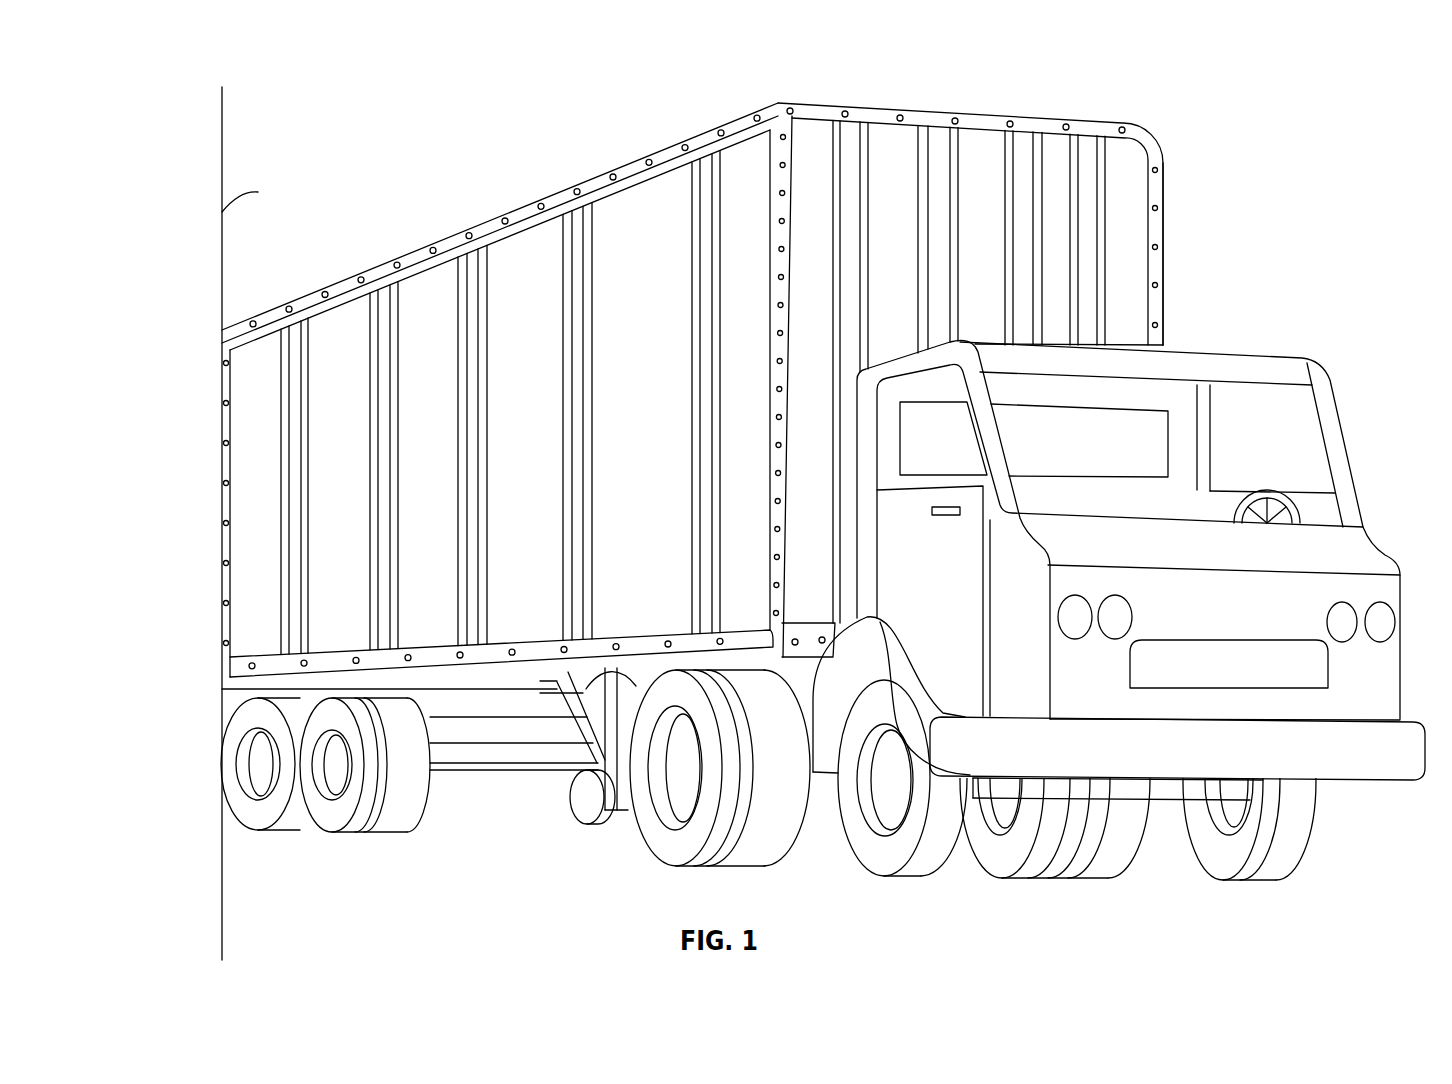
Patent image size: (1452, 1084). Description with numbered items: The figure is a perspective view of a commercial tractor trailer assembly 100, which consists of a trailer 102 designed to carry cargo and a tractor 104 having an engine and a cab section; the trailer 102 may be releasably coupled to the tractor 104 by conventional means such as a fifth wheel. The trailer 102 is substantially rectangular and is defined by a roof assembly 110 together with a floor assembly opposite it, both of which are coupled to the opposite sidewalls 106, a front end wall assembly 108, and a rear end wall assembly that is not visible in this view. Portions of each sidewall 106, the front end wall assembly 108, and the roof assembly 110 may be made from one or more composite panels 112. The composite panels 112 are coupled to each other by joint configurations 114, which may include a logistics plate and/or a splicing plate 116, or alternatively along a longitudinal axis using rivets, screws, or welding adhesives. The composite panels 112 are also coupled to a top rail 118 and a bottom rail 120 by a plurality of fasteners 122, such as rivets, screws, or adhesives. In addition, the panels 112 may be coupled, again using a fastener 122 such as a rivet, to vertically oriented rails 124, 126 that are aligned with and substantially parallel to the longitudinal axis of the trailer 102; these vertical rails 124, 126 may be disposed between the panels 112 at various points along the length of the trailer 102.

The tractor trailer assembly 100 is at (240, 80).
The trailer 102 is at (727, 108).
The tractor 104 is at (1343, 340).
The sidewall 106 is at (343, 466).
The front end wall assembly 108 is at (1035, 212).
The roof assembly 110 is at (808, 96).
The composite panel 112 is at (435, 285).
The joint configuration 114 is at (463, 260).
The splicing plate 116 is at (293, 603).
The top rail 118 is at (632, 166).
The bottom rail 120 is at (233, 668).
The fastener 122 is at (290, 304).
The vertically oriented rail 124 is at (222, 370).
The vertically oriented rail 126 is at (1158, 197).